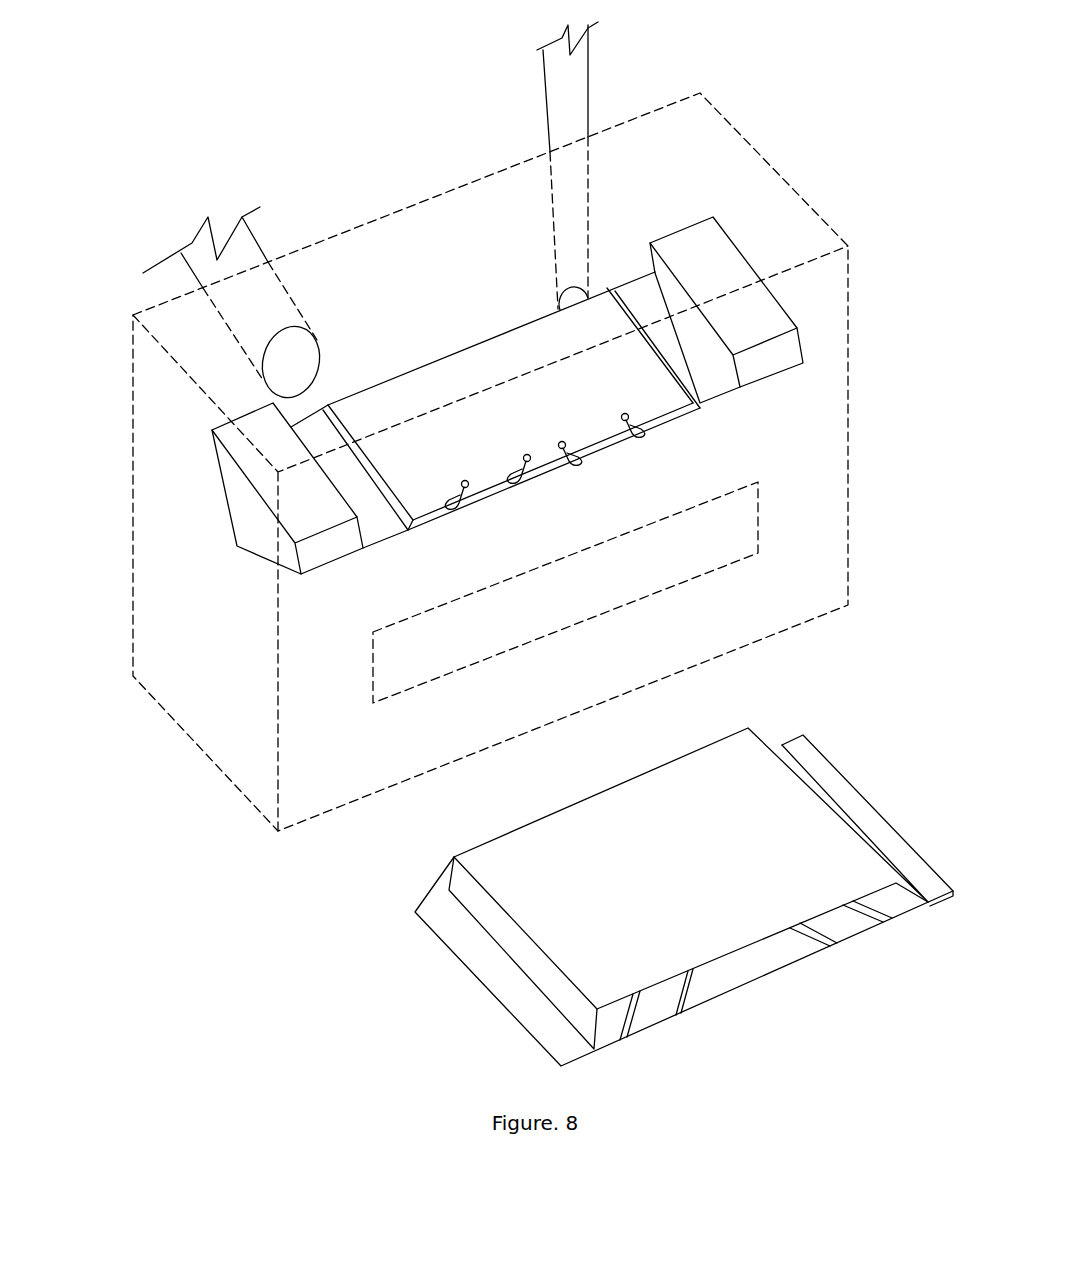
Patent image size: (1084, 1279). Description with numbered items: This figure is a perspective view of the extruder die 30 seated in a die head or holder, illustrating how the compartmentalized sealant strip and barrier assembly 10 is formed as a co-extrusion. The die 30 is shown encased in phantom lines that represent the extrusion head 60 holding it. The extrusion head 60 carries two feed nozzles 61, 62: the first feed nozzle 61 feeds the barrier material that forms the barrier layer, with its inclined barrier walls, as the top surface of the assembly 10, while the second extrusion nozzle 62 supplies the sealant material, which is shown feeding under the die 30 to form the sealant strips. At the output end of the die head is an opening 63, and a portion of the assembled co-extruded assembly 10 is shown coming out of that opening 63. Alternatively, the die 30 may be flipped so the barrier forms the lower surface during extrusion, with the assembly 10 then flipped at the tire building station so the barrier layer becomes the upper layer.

The compartmentalized sealant strip and barrier assembly 10 is at (498, 978).
The die 30 is at (488, 360).
The extrusion head 60 is at (177, 329).
The feed nozzle 61 is at (236, 253).
The extrusion nozzle 62 is at (573, 85).
The opening 63 is at (452, 658).